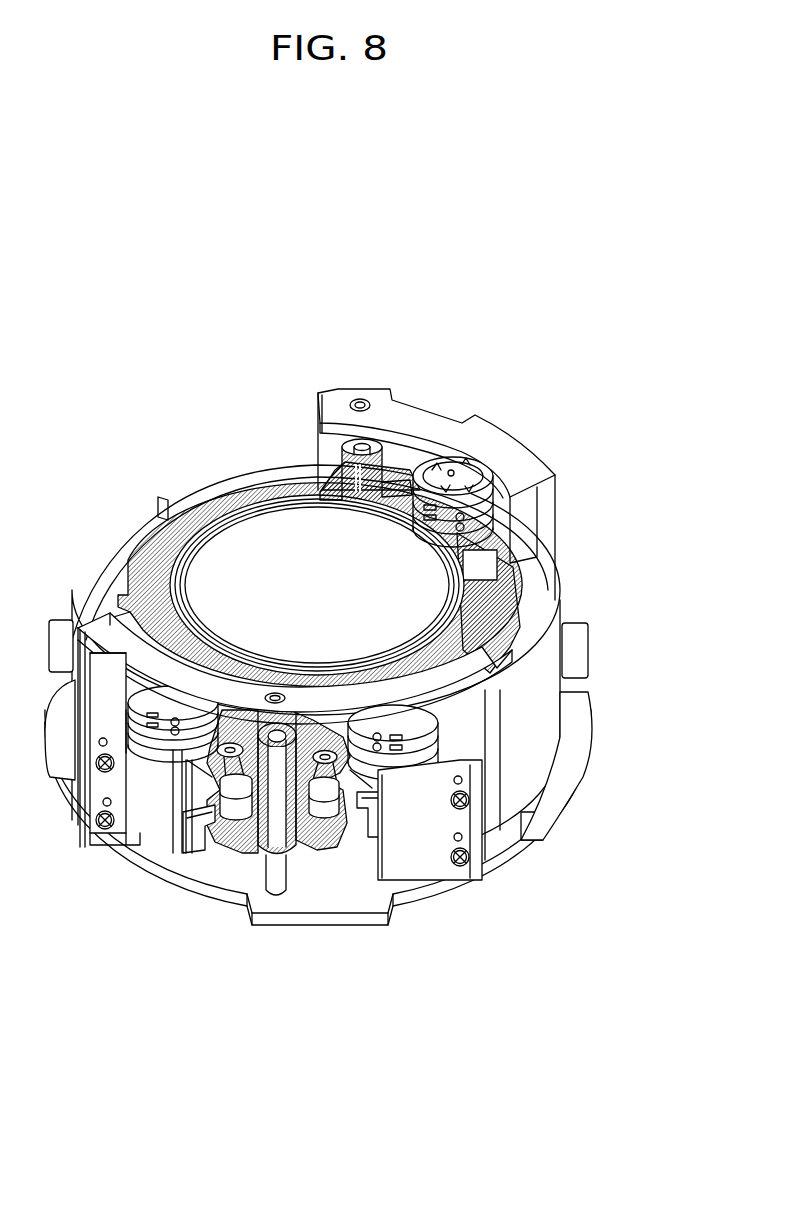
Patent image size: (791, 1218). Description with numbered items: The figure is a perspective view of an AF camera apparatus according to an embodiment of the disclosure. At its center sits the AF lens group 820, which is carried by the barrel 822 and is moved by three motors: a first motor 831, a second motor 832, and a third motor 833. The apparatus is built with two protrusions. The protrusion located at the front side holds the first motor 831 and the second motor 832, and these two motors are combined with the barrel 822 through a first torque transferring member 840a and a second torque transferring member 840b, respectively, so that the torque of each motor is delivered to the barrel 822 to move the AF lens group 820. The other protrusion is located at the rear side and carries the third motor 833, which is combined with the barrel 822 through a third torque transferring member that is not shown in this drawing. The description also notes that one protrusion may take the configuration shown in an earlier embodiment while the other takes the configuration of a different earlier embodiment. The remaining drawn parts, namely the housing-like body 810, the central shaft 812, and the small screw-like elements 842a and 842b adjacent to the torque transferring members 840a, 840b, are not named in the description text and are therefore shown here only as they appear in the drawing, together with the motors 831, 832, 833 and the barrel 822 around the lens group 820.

The housing 810 is at (524, 537).
The shaft 812 is at (276, 895).
The AF lens group 820 is at (276, 545).
The barrel 822 is at (154, 560).
The first motor 831 is at (130, 817).
The second motor 832 is at (443, 860).
The third motor 833 is at (505, 470).
The first torque transferring member 840a is at (200, 797).
The second torque transferring member 840b is at (380, 887).
The first bearing screw 842a is at (215, 822).
The second bearing screw 842b is at (330, 780).